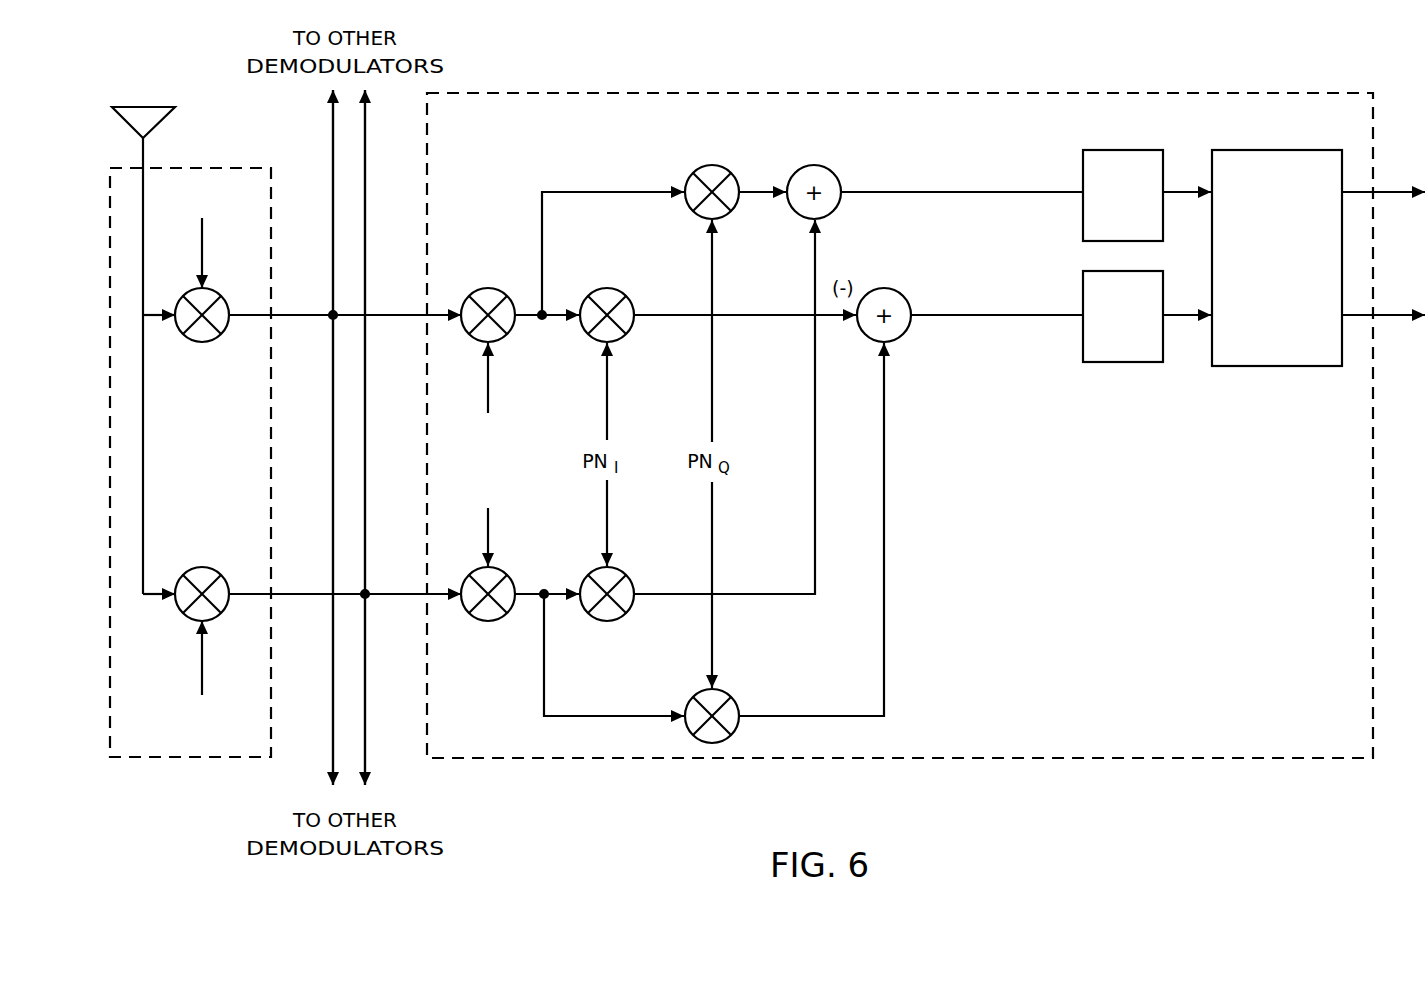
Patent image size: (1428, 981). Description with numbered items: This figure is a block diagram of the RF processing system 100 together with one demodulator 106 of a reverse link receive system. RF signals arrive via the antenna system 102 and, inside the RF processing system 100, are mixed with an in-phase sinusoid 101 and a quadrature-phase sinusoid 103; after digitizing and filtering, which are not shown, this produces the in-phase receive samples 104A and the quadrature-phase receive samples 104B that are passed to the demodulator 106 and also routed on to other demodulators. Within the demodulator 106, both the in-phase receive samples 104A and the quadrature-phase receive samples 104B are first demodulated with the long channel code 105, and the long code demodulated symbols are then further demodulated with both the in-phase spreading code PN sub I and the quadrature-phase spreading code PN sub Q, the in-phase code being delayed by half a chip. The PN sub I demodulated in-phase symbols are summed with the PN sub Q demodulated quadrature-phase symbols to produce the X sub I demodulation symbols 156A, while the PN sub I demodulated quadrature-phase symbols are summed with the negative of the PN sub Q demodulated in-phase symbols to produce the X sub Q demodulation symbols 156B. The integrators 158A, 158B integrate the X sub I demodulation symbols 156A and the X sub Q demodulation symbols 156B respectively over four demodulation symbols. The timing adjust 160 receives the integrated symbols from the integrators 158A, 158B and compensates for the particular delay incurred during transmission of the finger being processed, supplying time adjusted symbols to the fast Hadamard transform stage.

The RF processing system 100 is at (217, 168).
The in-phase sinusoid 101 is at (202, 256).
The antenna system 102 is at (143, 107).
The quadrature-phase sinusoid 103 is at (202, 672).
The in-phase receive samples 104A is at (322, 315).
The quadrature-phase receive samples 104B is at (322, 594).
The long channel code 105 is at (488, 382).
The demodulator 106 is at (908, 93).
The X_I demodulation symbols 156A is at (1058, 192).
The X_Q demodulation symbols 156B is at (1058, 315).
The integrator 158A is at (1135, 150).
The integrator 158B is at (1135, 362).
The timing adjust 160 is at (1283, 150).